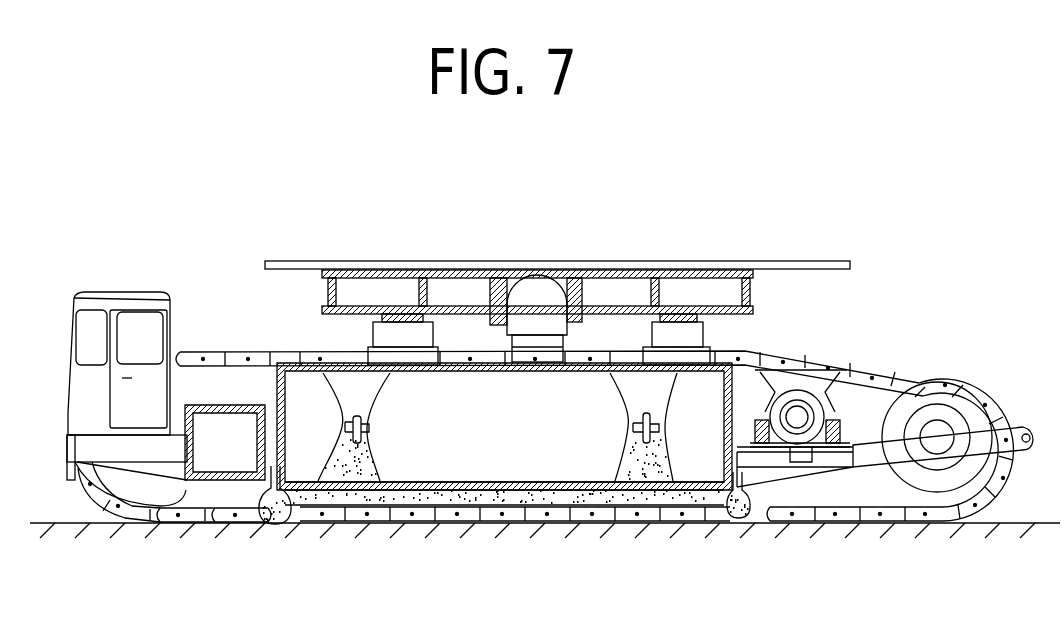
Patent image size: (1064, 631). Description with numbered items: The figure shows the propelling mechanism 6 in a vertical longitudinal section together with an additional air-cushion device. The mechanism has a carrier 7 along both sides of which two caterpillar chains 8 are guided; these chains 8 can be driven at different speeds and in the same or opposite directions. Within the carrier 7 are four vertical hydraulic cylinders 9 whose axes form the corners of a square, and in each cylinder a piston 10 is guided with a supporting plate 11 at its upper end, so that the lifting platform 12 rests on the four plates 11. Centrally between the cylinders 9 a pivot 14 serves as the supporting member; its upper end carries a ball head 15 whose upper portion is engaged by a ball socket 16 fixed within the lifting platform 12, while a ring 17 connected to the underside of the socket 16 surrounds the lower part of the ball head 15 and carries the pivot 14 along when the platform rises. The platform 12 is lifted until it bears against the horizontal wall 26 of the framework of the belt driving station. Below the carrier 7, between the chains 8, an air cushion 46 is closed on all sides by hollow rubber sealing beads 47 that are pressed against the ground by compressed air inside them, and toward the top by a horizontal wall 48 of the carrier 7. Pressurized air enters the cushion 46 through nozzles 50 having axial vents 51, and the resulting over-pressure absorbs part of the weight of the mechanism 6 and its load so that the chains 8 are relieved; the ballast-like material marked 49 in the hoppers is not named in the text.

The propelling mechanism 6 is at (212, 262).
The carrier 7 is at (577, 463).
The caterpillar chains 8 is at (898, 370).
The cylinders 9 is at (378, 356).
The pistons 10 is at (370, 327).
The supporting plates 11 is at (398, 312).
The lifting platform 12 is at (716, 282).
The pivot 14 is at (563, 343).
The ball head 15 is at (548, 296).
The ball socket 16 is at (511, 290).
The ring 17 is at (460, 312).
The horizontal wall 26 is at (278, 276).
The air cushion 46 is at (502, 500).
The hollow sealing beads 47 is at (268, 521).
The horizontal wall 48 is at (483, 483).
The ballast in hopper 49 is at (378, 468).
The nozzles 50 is at (377, 455).
The axial vents 51 is at (360, 416).